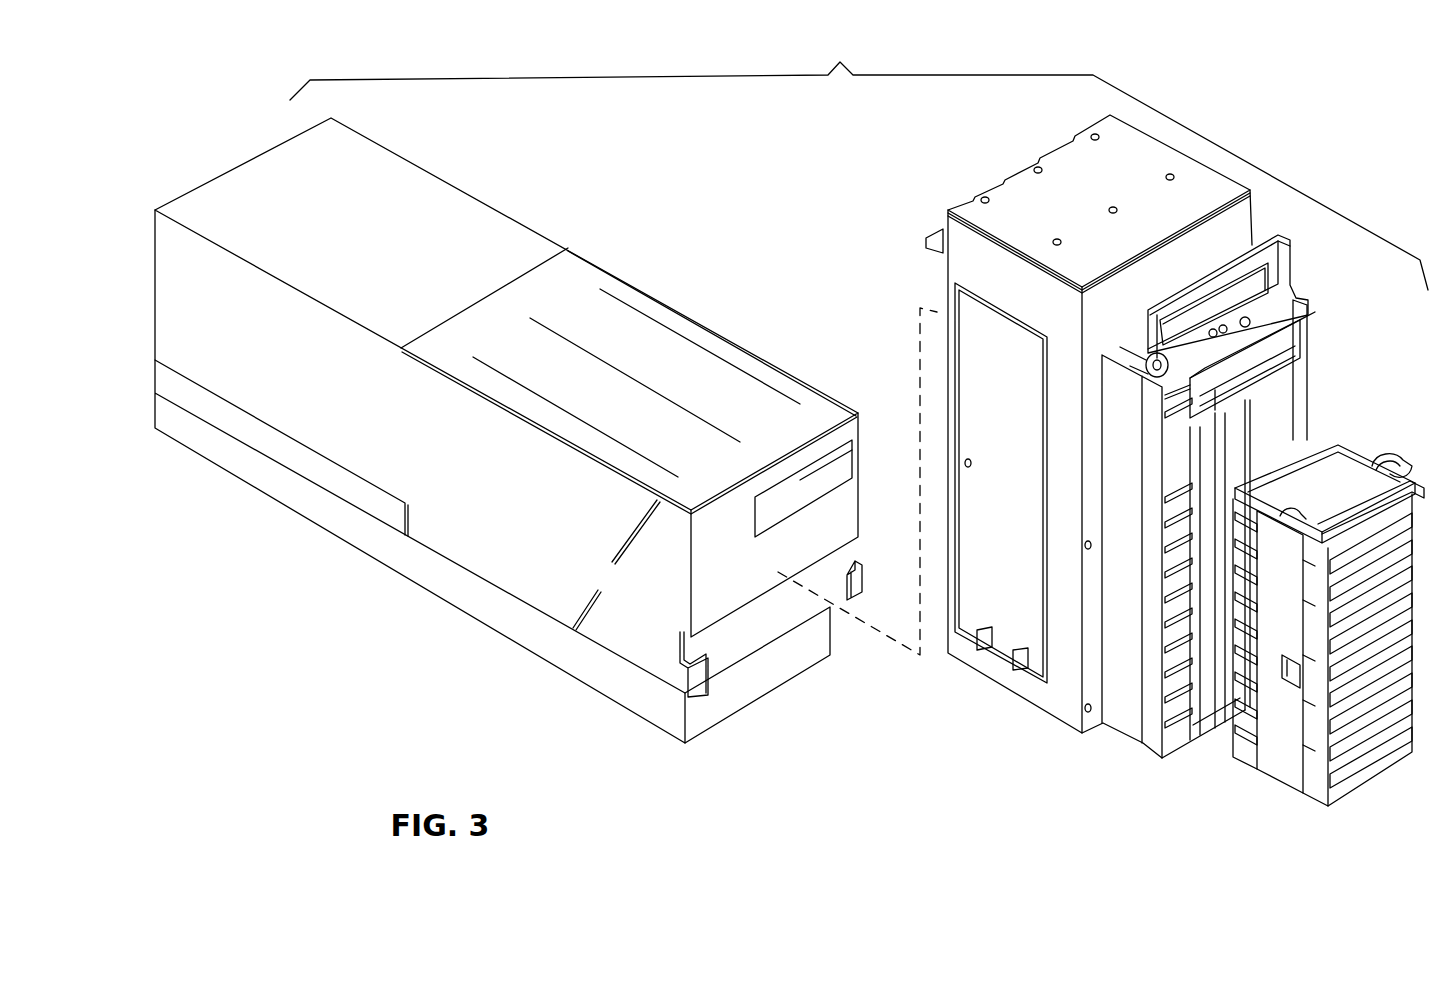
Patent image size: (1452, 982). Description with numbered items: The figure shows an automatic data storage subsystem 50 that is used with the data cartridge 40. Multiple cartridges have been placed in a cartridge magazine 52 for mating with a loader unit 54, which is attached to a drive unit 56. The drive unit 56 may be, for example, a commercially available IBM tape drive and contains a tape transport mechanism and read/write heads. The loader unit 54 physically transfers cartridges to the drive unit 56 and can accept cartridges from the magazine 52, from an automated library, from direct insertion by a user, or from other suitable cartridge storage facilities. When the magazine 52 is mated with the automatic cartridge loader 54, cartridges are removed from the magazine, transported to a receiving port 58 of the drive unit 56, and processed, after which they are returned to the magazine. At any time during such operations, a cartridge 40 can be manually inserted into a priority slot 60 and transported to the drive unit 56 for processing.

The automatic data storage subsystem 50 is at (859, 161).
The drive unit 56 is at (473, 616).
The receiving port 58 is at (822, 479).
The loader unit 54 is at (988, 675).
The priority slot 60 is at (1285, 335).
The data cartridge 40 is at (1268, 367).
The cartridge magazine 52 is at (1380, 456).